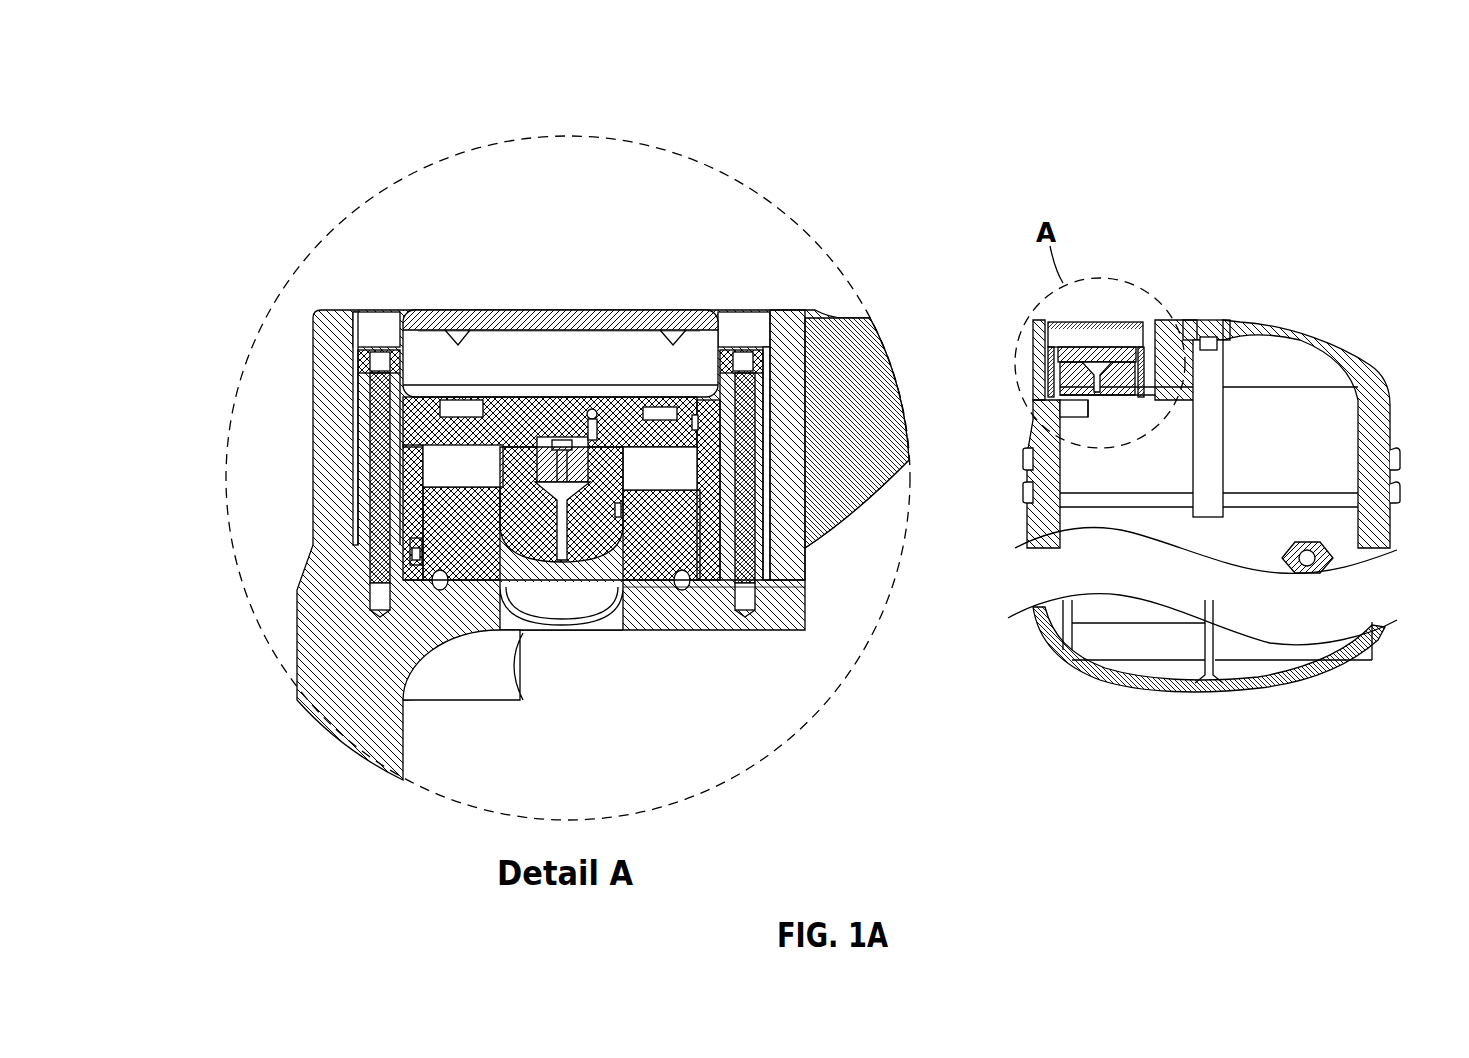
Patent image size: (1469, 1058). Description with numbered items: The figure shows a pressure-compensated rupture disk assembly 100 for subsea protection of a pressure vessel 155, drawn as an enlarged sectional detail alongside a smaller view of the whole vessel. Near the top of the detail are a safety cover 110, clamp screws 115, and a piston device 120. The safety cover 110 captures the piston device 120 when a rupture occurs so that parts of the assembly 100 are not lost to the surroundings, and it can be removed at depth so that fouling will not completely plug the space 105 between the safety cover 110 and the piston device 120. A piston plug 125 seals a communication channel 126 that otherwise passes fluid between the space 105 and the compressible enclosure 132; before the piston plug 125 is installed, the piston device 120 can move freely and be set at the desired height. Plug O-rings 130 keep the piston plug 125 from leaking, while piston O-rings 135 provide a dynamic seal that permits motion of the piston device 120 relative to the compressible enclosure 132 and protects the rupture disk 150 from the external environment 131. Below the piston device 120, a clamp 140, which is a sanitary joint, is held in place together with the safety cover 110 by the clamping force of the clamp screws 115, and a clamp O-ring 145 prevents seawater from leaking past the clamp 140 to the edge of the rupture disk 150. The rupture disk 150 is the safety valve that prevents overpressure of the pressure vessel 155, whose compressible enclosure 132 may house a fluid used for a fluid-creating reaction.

The pressure-compensated rupture disk assembly 100 is at (272, 127).
The space 105 is at (503, 362).
The safety cover 110 is at (687, 312).
The clamp screws 115 is at (765, 363).
The piston device 120 is at (640, 392).
The piston plug 125 is at (583, 392).
The communication channel 126 is at (595, 542).
The plug O-rings 130 is at (594, 418).
The external environment 131 is at (508, 195).
The compressible enclosure 132 is at (543, 568).
The piston O-rings 135 is at (623, 513).
The clamp 140 is at (772, 513).
The clamp O-ring 145 is at (742, 547).
The rupture disk 150 is at (660, 600).
The pressure vessel 155 is at (775, 632).